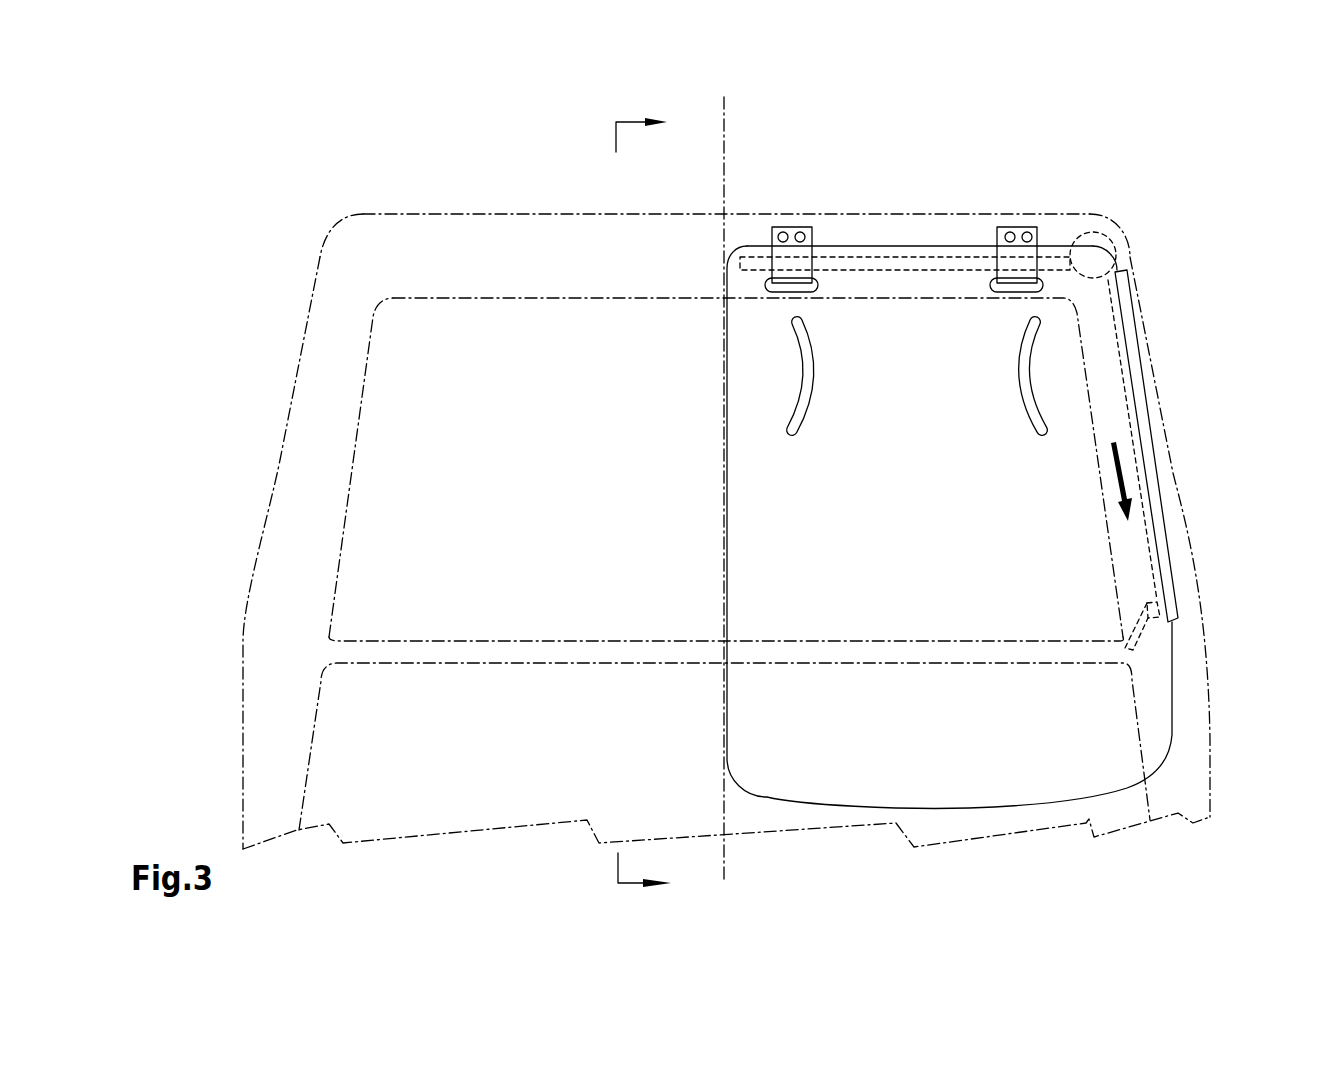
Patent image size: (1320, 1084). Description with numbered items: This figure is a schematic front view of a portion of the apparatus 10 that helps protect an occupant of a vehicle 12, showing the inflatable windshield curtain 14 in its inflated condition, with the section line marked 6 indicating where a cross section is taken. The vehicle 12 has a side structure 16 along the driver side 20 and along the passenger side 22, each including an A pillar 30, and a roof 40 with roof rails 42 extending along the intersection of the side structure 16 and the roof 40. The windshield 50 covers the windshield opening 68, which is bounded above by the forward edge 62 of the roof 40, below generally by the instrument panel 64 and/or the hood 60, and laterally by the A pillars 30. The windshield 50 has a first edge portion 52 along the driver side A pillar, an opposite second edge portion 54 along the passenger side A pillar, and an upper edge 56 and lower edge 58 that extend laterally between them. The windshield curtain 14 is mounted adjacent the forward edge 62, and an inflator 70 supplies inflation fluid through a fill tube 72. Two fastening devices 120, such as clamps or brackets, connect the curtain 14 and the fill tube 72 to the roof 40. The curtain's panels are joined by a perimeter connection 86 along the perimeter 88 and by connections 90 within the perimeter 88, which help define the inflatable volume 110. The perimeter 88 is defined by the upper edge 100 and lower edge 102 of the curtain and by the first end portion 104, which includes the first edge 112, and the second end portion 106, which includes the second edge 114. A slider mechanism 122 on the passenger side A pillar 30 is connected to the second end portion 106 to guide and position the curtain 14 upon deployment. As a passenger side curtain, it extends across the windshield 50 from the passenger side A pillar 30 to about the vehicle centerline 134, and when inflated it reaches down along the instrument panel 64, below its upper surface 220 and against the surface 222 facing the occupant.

The apparatus 10 is at (1017, 181).
The vehicle 12 is at (873, 153).
The inflatable windshield curtain 14 is at (770, 610).
The side structure 16 is at (299, 547).
The driver side 20 is at (478, 855).
The passenger side 22 is at (875, 838).
The A pillar 30 is at (1160, 437).
The roof 40 is at (853, 228).
The roof rails 42 is at (358, 243).
The windshield 50 is at (505, 333).
The first edge portion 52 is at (348, 468).
The second edge portion 54 is at (1092, 464).
The upper edge 56 is at (627, 300).
The lower edge 58 is at (591, 641).
The hood 60 is at (1051, 639).
The forward edge 62 is at (658, 255).
The instrument panel 64 is at (571, 718).
The windshield opening 68 is at (570, 298).
The inflator 70 is at (1123, 252).
The fill tube 72 is at (953, 267).
The perimeter connection 86 is at (794, 797).
The perimeter 88 is at (823, 804).
The connections 90 is at (802, 367).
The upper edge 100 is at (932, 247).
The lower edge 102 is at (940, 808).
The first end portion 104 is at (752, 517).
The second end portion 106 is at (1110, 393).
The inflatable volume 110 is at (885, 353).
The first edge 112 is at (725, 447).
The second edge 114 is at (1140, 410).
The fastening devices 120 is at (790, 245).
The slider mechanism 122 is at (1152, 475).
The vehicle centerline 134 is at (724, 138).
The upper surface 220 is at (911, 661).
The surface 222 is at (1075, 747).
The section line 6- 6 is at (652, 502).